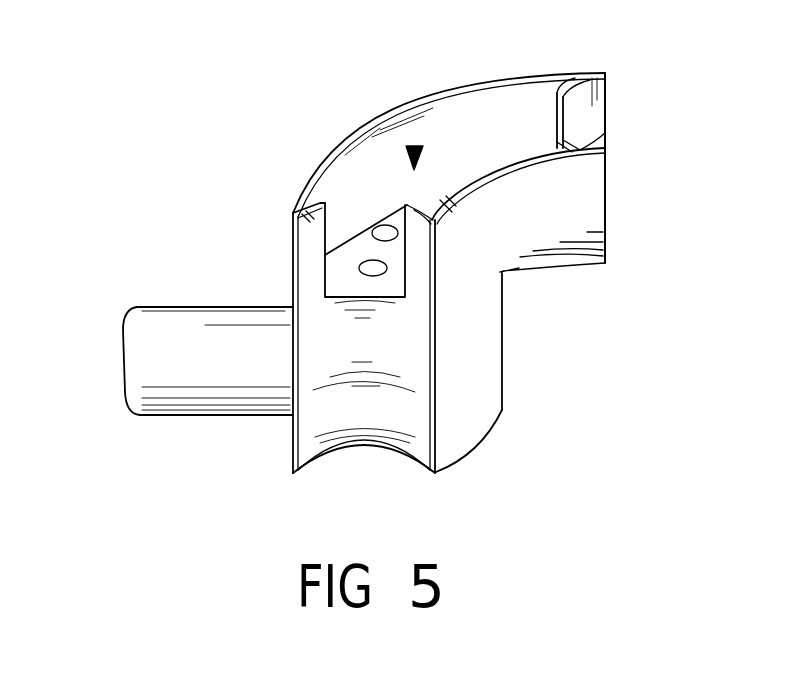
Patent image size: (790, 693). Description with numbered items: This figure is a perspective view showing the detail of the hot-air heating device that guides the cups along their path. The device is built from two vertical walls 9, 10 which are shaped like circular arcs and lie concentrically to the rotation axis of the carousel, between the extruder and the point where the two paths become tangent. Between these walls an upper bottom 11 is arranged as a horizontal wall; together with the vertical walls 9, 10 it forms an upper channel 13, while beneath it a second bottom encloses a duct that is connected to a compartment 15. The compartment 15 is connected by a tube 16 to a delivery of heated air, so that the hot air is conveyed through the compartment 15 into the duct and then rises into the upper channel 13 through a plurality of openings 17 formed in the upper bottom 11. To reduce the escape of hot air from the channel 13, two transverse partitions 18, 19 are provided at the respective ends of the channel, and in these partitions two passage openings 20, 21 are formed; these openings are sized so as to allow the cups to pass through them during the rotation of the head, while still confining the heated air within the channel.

The vertical wall 9 is at (455, 110).
The vertical wall 10 is at (498, 163).
The upper channel 13 is at (413, 148).
The openings 17 is at (383, 226).
The upper bottom 11 is at (348, 257).
The transverse partition 18 is at (298, 213).
The passage opening 20 is at (310, 280).
The tube 16 is at (150, 365).
The compartment 15 is at (473, 362).
The passage opening 21 is at (560, 111).
The transverse partition 19 is at (577, 138).